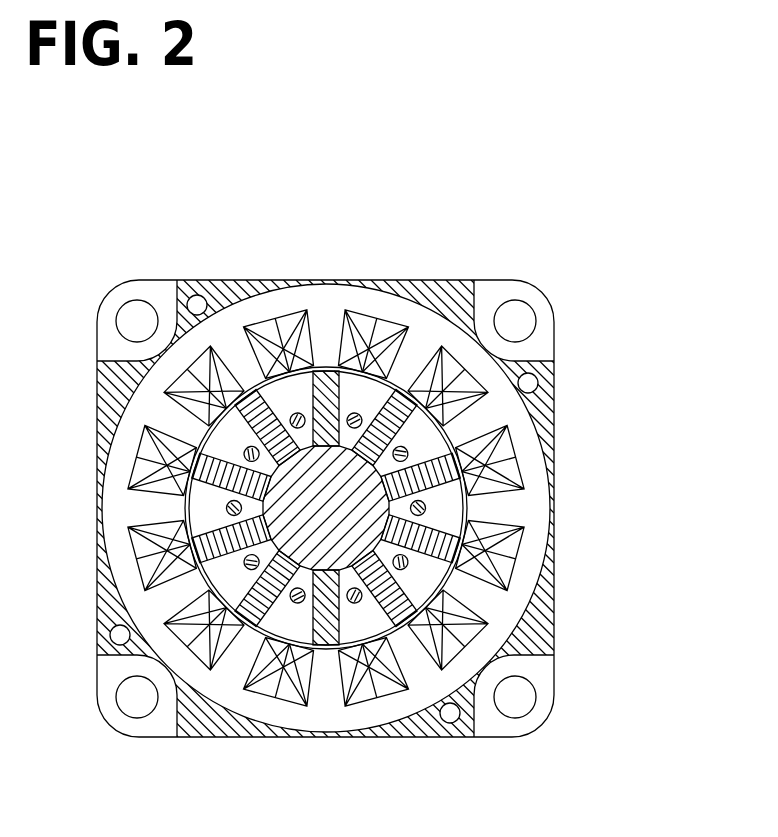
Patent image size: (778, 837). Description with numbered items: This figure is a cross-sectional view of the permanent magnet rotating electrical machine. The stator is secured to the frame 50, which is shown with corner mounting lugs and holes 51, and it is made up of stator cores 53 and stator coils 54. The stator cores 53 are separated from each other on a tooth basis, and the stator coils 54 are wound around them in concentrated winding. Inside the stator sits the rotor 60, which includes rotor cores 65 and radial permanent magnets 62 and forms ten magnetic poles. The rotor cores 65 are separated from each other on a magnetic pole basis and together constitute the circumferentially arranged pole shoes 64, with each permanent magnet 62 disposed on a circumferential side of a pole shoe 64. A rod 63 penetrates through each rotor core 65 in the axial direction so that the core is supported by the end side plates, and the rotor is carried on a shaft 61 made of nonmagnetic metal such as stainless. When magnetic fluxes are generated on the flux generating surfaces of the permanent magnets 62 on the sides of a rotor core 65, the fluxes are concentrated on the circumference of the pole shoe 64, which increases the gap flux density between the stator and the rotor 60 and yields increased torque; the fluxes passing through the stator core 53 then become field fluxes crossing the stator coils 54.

The frame 50 is at (455, 290).
The mounting hole 51 is at (541, 328).
The stator core 53 is at (327, 297).
The stator coil 54 is at (467, 383).
The rotor 60 is at (424, 512).
The shaft 61 is at (445, 633).
The permanent magnet 62 is at (488, 620).
The rod 63 is at (440, 530).
The pole shoe 64 is at (425, 433).
The rotor core 65 is at (458, 457).